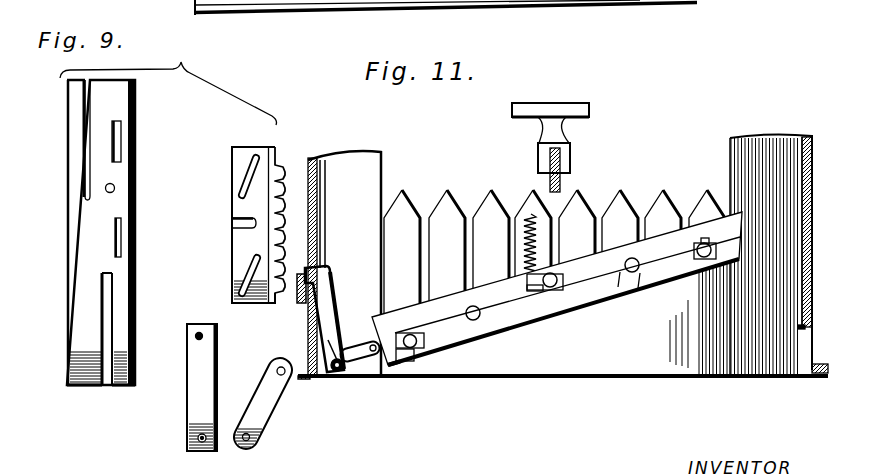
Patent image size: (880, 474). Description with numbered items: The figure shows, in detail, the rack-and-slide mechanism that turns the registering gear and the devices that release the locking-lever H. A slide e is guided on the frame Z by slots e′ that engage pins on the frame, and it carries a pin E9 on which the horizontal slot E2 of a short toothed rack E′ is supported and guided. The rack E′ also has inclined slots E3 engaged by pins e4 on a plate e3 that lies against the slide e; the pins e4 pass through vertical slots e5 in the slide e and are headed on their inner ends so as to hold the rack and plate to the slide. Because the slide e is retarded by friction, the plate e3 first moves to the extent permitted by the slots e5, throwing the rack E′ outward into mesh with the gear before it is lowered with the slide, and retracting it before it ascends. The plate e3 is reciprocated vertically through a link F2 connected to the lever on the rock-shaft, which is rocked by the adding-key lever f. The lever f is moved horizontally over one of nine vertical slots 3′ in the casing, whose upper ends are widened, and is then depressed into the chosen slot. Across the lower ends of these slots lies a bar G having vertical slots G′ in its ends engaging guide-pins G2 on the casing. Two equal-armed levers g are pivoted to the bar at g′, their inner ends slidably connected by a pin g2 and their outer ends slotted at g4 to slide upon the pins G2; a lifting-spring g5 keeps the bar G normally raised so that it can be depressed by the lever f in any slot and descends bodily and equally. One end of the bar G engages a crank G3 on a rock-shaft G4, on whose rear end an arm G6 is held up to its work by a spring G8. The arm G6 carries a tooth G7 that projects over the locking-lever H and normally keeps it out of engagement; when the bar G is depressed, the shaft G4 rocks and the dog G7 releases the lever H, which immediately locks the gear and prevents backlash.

In FIG. 9, the slide e is at (72, 252).
In FIG. 9, the slots e′ is at (84, 137).
In FIG. 9, the vertical slots e5 is at (121, 130).
In FIG. 9, the pin E9 is at (116, 188).
In FIG. 9, the toothed rack E′ is at (281, 167).
In FIG. 9, the inclined slots E3 is at (245, 176).
In FIG. 9, the horizontal slot E2 is at (233, 226).
In FIG. 9, the plate e3 is at (214, 358).
In FIG. 9, the pins e4 is at (195, 337).
In FIG. 9, the link F2 is at (272, 411).
In FIG. 11, the frame Z is at (737, 150).
In FIG. 11, the vertical slots 3′ is at (470, 238).
In FIG. 11, the adding-key lever f is at (557, 157).
In FIG. 11, the lifting-spring g5 is at (530, 214).
In FIG. 11, the pin g2 is at (556, 274).
In FIG. 11, the bar G is at (558, 292).
In FIG. 11, the equal-armed levers g is at (518, 304).
In FIG. 11, the pivots g′ is at (637, 277).
In FIG. 11, the guide-pins G2 is at (410, 335).
In FIG. 11, the vertical slots G′ is at (407, 358).
In FIG. 11, the crank G3 is at (368, 354).
In FIG. 11, the rock-shaft G4 is at (339, 374).
In FIG. 11, the arm G6 is at (328, 279).
In FIG. 11, the tooth G7 is at (307, 272).
In FIG. 11, the spring G8 is at (336, 352).
In FIG. 11, the slots g4 is at (704, 242).
In FIG. 11, the locking-lever H is at (298, 336).